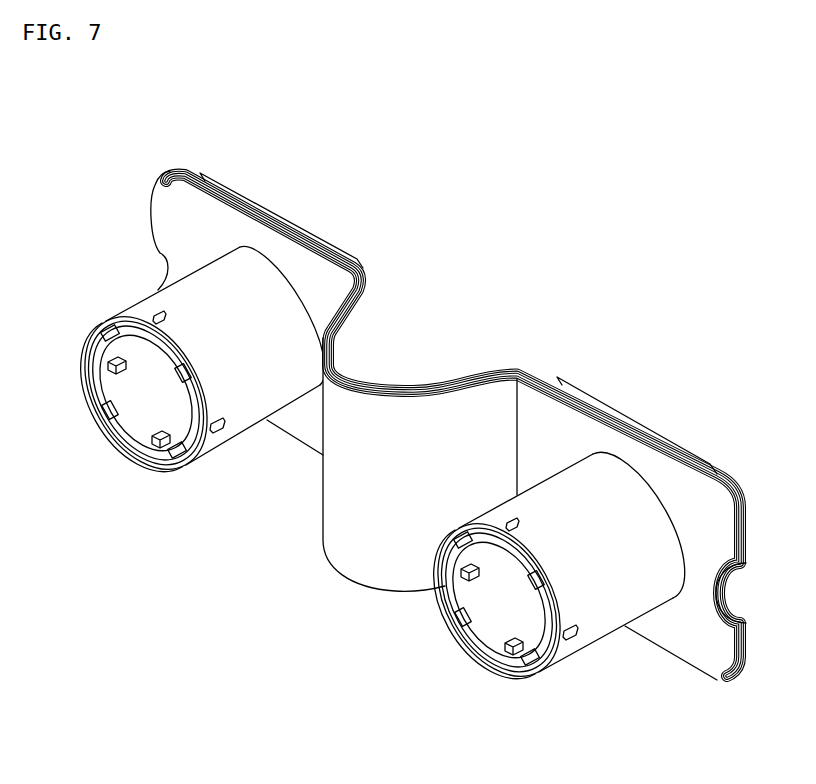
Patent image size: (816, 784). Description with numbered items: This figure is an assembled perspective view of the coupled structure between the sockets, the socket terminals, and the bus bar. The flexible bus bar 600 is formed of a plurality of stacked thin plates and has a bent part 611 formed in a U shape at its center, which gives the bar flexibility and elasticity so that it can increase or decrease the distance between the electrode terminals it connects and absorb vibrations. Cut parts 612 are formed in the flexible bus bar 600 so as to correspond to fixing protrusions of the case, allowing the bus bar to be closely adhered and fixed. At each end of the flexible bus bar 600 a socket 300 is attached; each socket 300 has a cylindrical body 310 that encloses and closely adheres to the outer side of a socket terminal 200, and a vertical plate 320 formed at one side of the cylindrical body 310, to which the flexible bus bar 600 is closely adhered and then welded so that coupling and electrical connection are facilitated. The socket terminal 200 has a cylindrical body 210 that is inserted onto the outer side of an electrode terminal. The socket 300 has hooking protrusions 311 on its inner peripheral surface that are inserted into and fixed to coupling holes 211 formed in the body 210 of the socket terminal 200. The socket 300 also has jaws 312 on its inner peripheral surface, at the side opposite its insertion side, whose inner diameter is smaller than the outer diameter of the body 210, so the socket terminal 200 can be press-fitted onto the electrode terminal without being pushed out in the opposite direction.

The flexible bus bar 600 is at (468, 365).
The socket 300 is at (353, 172).
The cylindrical body 310 is at (260, 273).
The vertical plate 320 is at (220, 180).
The cut part 612 is at (160, 262).
The bent part 611 is at (365, 563).
The socket terminal 200 is at (124, 468).
The body 210 is at (555, 667).
The coupling hole 211 is at (443, 570).
The hooking protrusion 311 is at (447, 603).
The jaw 312 is at (460, 633).